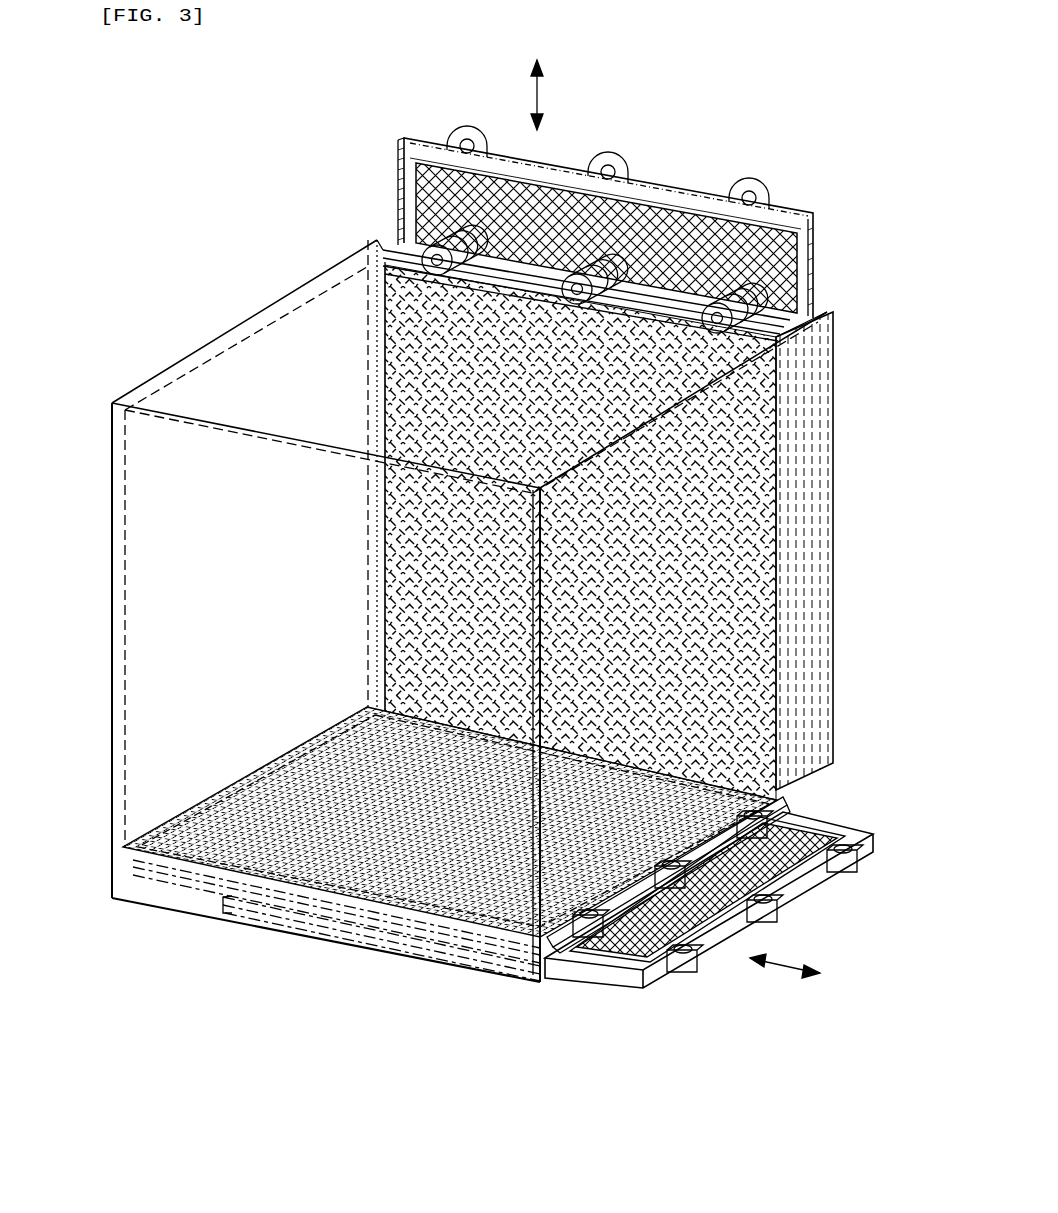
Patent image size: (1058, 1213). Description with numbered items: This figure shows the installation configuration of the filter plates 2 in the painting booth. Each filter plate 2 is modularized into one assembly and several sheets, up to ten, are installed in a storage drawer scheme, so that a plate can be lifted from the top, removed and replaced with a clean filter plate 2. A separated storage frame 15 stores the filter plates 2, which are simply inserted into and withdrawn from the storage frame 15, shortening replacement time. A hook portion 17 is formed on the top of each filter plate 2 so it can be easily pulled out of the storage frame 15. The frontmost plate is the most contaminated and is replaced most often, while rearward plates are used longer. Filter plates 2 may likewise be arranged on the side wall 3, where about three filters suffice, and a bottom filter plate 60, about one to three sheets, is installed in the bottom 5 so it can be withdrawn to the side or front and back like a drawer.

The filter plate 2 is at (412, 188).
The side wall 3 is at (157, 575).
The bottom 5 is at (178, 815).
The storage frame 15 is at (823, 293).
The hook portion 17 is at (612, 157).
The bottom filter plate 60 is at (790, 863).